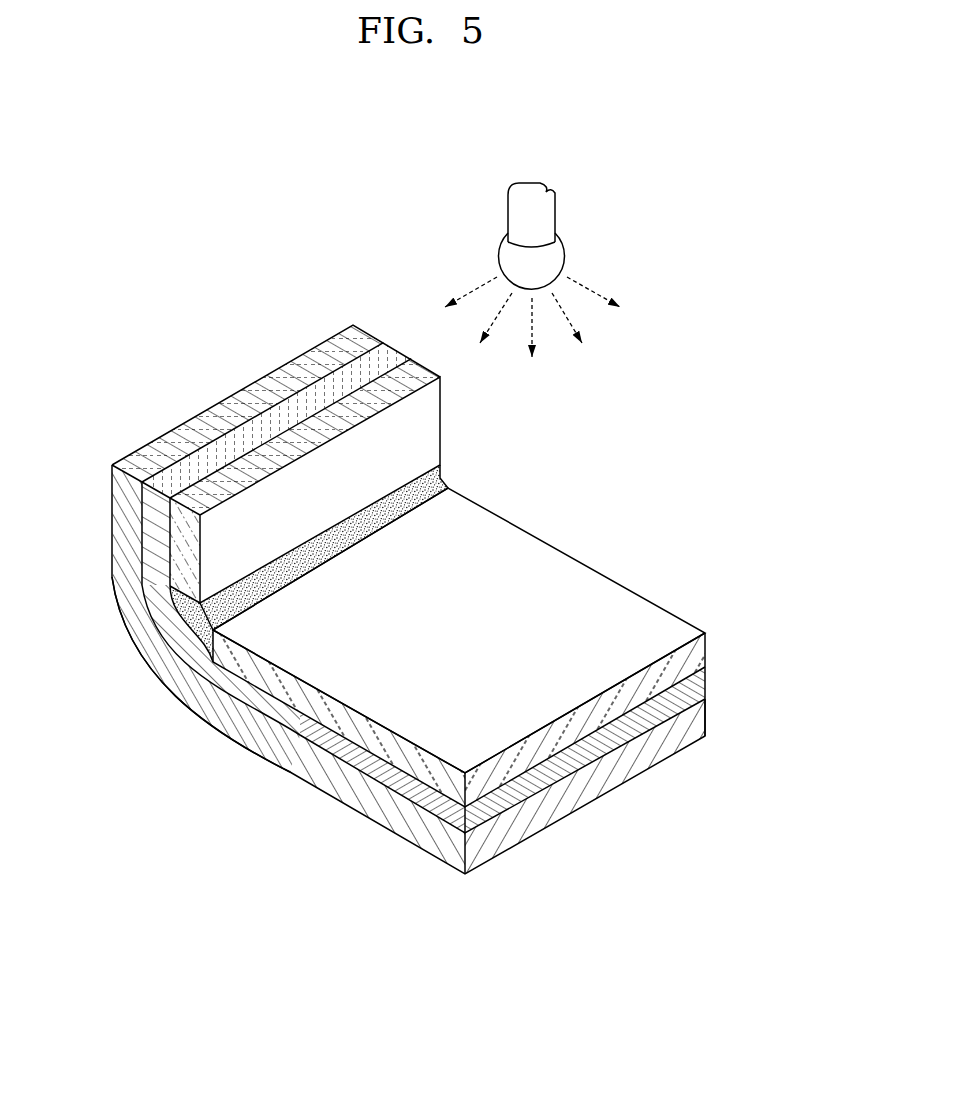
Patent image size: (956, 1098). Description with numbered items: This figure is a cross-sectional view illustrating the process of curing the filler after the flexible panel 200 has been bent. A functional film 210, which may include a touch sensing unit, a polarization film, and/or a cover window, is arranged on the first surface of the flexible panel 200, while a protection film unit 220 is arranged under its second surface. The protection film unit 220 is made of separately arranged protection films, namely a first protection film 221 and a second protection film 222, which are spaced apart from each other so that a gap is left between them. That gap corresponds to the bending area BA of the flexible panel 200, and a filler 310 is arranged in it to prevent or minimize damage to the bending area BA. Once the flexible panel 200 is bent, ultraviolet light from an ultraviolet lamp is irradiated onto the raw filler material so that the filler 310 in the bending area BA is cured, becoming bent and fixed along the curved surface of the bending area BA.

The functional film 210 is at (695, 720).
The flexible panel 200 is at (695, 690).
The protection film unit 220 is at (695, 655).
The first protection film 221 is at (570, 568).
The second protection film 222 is at (430, 423).
The filler 310 is at (443, 478).
The bending area BA is at (165, 635).